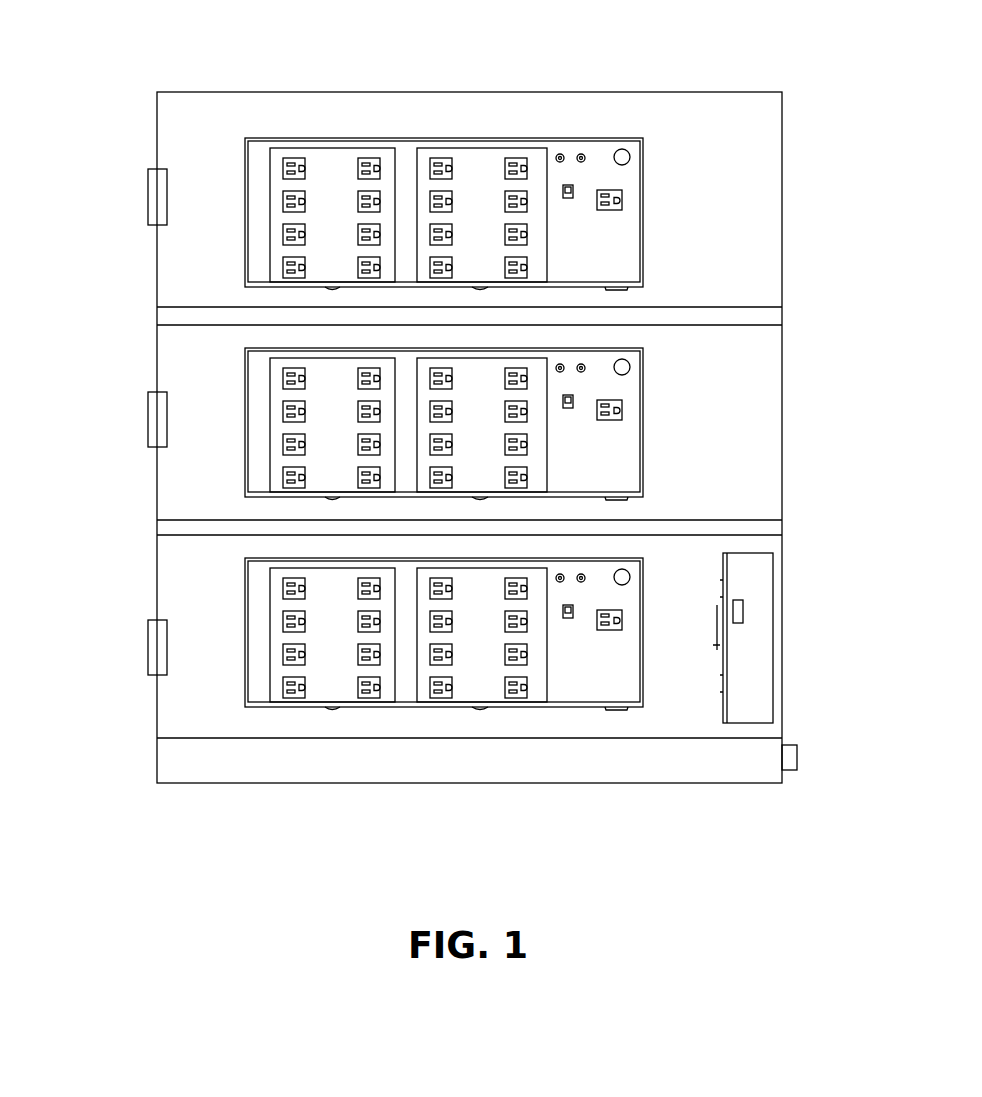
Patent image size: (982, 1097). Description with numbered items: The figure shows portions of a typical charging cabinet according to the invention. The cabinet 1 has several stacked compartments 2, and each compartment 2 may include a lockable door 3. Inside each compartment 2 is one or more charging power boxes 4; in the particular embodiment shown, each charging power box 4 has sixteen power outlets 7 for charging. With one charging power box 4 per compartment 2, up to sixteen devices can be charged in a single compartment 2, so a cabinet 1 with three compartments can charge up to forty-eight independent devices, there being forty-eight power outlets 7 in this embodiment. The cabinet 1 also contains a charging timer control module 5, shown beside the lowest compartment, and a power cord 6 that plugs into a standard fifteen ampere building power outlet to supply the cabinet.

The cabinet 1 is at (487, 103).
The compartment 2 is at (757, 253).
The lockable door 3 is at (155, 184).
The charging power box 4 is at (617, 229).
The charging timer control module 5 is at (745, 573).
The power cord 6 is at (790, 757).
The power outlet 7 is at (292, 165).